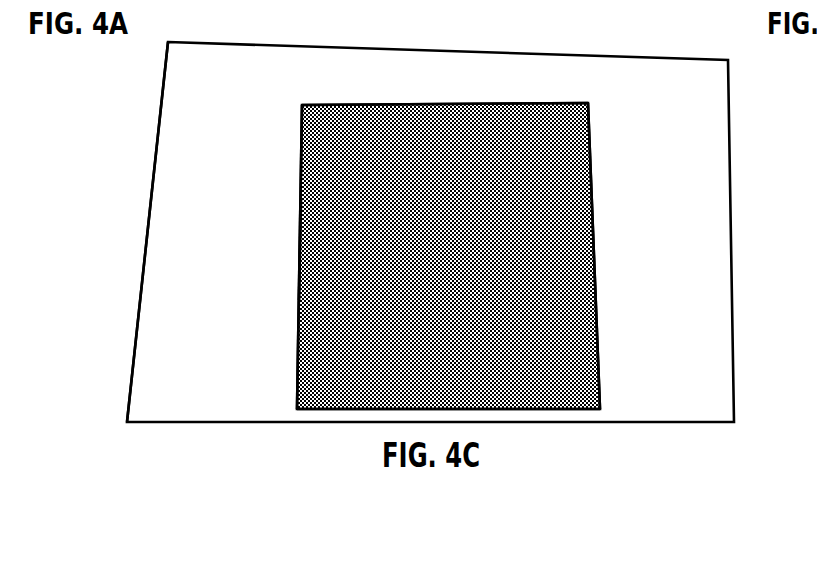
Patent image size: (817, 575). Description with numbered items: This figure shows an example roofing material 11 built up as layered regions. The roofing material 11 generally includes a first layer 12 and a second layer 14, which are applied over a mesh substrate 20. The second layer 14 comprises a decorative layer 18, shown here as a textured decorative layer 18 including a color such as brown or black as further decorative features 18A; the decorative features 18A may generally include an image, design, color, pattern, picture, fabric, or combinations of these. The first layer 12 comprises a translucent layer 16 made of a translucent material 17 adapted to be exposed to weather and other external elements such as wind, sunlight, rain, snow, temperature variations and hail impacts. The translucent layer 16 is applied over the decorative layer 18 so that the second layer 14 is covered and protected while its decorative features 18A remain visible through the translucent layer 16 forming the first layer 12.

The roofing material 11 is at (712, 161).
The first layer 12 is at (316, 305).
The second layer 14 is at (600, 241).
The translucent layer 16 is at (317, 240).
The translucent material 17 is at (302, 152).
The decorative layer 18 is at (580, 359).
The decorative features 18A is at (492, 133).
The mesh substrate 20 is at (152, 368).